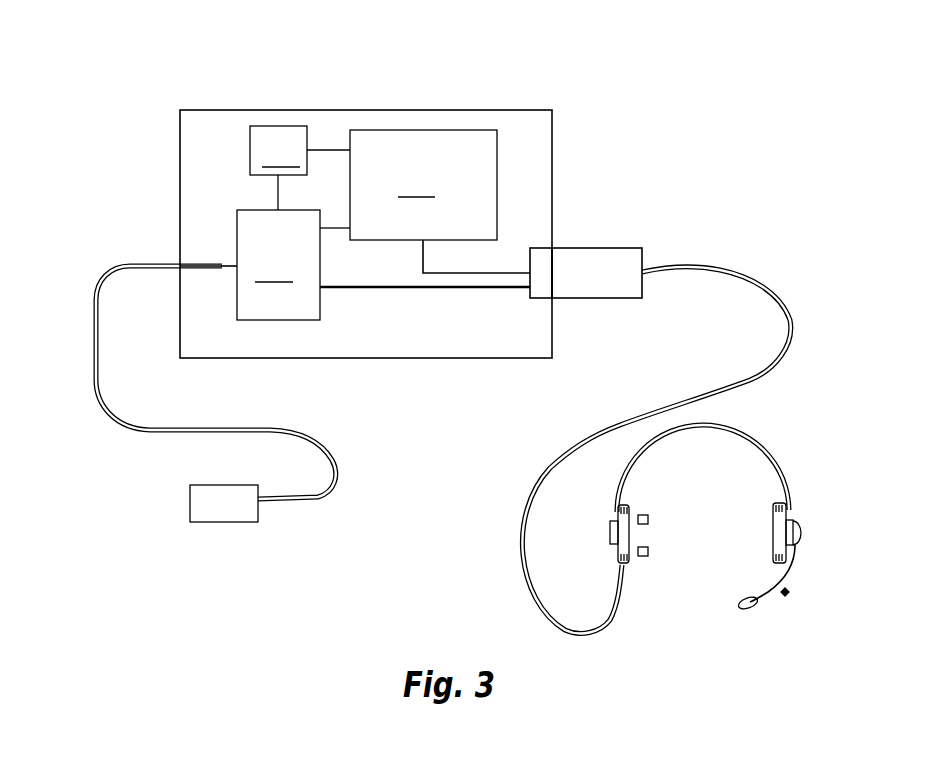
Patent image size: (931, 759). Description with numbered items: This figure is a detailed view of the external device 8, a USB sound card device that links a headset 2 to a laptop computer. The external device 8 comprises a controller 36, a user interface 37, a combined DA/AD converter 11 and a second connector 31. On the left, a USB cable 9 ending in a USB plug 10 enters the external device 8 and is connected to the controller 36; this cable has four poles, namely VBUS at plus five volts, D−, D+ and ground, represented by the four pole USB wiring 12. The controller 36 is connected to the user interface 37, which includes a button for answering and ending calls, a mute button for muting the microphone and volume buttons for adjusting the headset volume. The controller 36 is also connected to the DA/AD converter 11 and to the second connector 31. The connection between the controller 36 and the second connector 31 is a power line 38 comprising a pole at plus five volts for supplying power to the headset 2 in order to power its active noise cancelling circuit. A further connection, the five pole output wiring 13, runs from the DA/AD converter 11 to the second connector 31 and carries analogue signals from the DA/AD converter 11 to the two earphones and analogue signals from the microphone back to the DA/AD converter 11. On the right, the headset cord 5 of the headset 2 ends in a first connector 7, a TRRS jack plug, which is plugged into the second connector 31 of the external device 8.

The headset 2 is at (695, 590).
The headset cord 5 is at (776, 297).
The first connector 7 is at (607, 270).
The external device 8 is at (440, 360).
The USB cable 9 is at (130, 262).
The USB plug 10 is at (227, 505).
The DA/AD converter 11 is at (408, 185).
The 4 pole USB wiring 12 is at (208, 262).
The 5 pole output wiring 13 is at (513, 270).
The second connector 31 is at (540, 255).
The controller 36 is at (278, 265).
The user interface 37 is at (300, 168).
The power line 38 is at (495, 292).